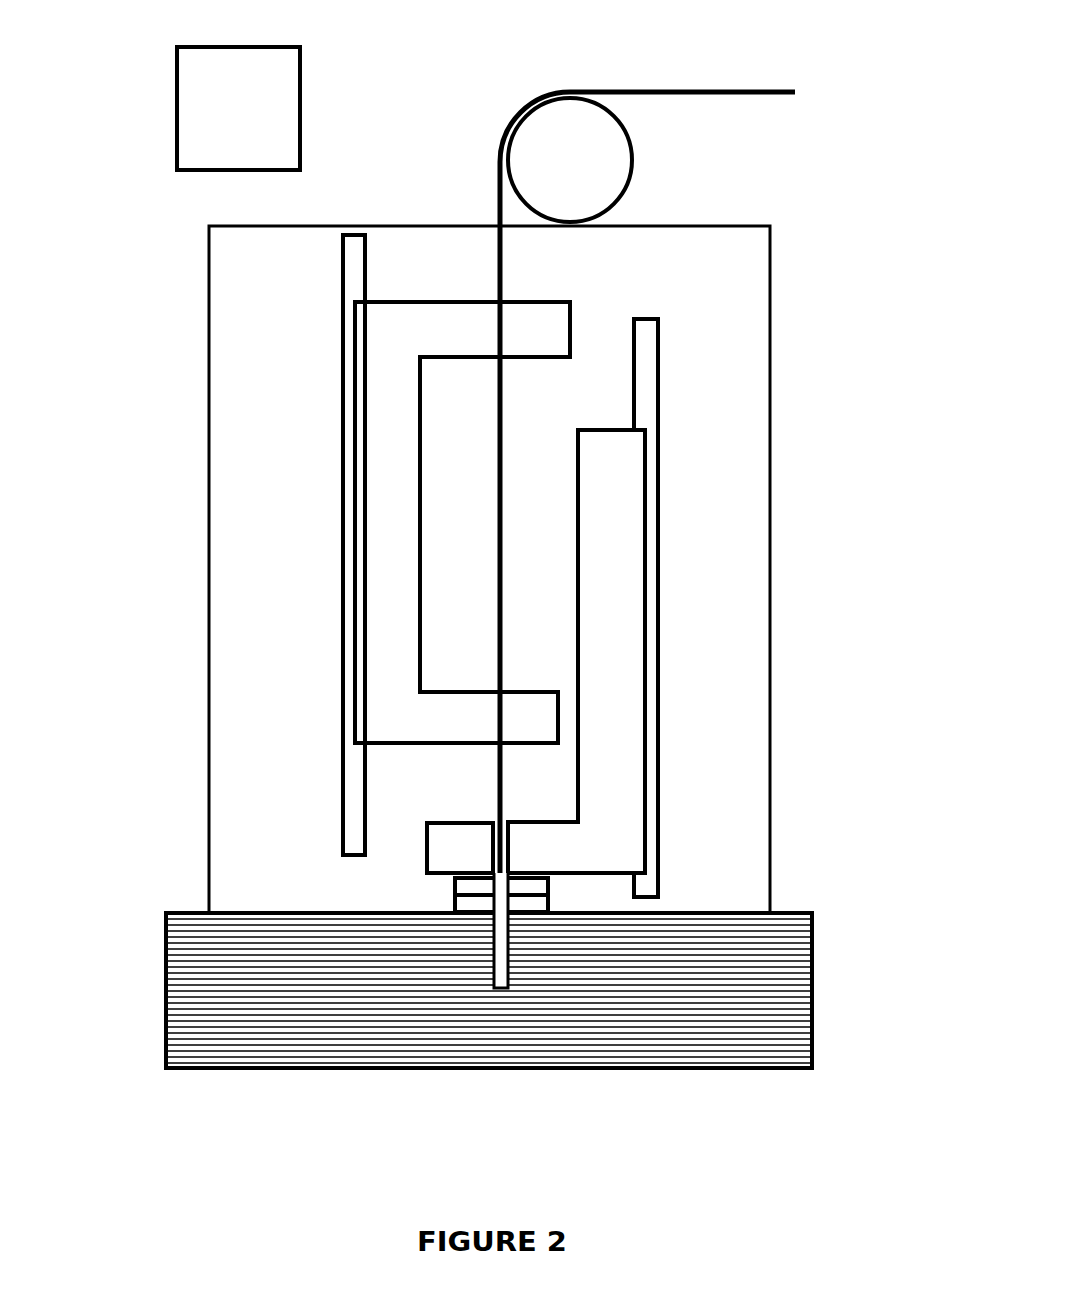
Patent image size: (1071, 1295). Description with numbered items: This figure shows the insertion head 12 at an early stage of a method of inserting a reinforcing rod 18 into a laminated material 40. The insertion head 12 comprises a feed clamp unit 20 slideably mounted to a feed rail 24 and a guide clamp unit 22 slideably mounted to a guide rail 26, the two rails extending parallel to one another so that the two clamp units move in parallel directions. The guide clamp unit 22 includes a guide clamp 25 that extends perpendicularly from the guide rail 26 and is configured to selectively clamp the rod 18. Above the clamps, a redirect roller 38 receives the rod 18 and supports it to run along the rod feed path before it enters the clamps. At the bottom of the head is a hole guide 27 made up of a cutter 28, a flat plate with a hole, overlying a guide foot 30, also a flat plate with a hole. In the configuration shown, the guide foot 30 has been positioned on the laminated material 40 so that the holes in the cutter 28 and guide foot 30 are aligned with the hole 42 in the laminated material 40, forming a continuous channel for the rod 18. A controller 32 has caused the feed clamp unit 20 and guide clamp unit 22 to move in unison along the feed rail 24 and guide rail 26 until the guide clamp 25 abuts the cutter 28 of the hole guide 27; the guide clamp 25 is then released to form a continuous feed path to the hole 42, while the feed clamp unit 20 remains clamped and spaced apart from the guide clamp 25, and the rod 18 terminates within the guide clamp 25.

The insertion head 12 is at (67, 238).
The reinforcing rod 18 is at (685, 92).
The feed clamp unit 20 is at (395, 478).
The guide clamp unit 22 is at (618, 590).
The feed rail 24 is at (352, 263).
The guide clamp 25 is at (560, 843).
The guide rail 26 is at (643, 410).
The hole guide 27 is at (452, 893).
The cutter 28 is at (548, 884).
The guide foot 30 is at (540, 903).
The controller 32 is at (240, 70).
The redirect roller 38 is at (585, 150).
The laminated material 40 is at (752, 1027).
The hole 42 is at (500, 965).